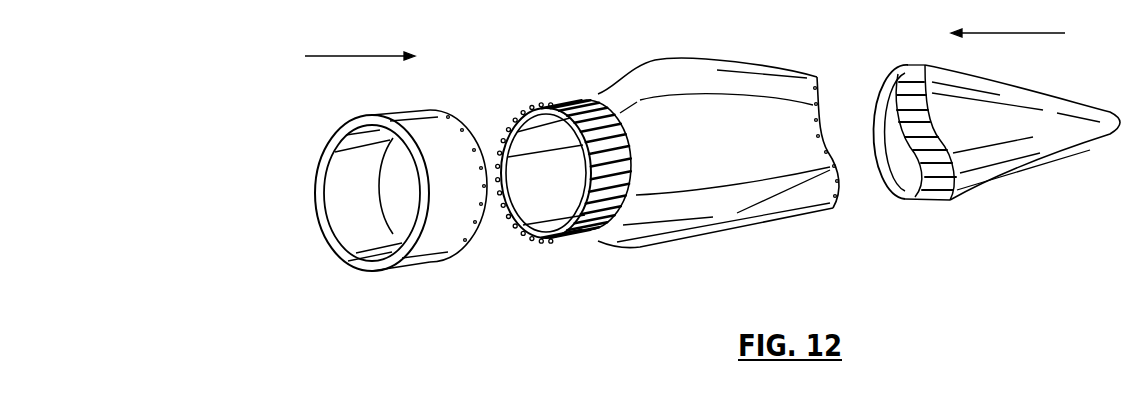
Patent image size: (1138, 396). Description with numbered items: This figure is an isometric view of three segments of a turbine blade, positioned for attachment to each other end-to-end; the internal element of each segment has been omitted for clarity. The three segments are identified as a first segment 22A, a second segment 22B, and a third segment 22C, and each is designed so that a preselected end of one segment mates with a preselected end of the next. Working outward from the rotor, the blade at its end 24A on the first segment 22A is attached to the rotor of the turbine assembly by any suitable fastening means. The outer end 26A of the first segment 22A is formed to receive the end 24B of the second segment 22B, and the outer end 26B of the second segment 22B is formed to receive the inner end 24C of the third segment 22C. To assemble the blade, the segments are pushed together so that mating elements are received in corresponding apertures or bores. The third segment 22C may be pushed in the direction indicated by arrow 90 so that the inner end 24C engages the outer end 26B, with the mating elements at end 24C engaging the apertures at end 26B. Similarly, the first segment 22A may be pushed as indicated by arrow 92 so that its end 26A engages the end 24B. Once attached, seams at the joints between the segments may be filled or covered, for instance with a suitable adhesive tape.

The first segment 22A is at (390, 106).
The second segment 22B is at (692, 50).
The third segment 22C is at (1026, 78).
The end of blade 24A is at (386, 271).
The end of second segment 24B is at (530, 241).
The inner end of third segment 24C is at (903, 196).
The end of first segment 26A is at (460, 255).
The outer end of second segment 26B is at (840, 198).
The arrow 90 is at (1008, 23).
The arrow 92 is at (360, 45).